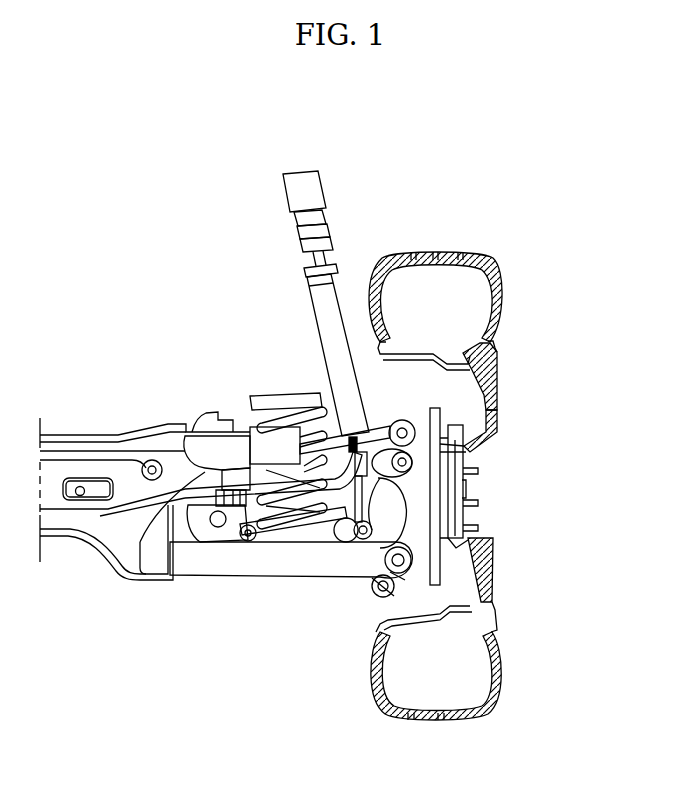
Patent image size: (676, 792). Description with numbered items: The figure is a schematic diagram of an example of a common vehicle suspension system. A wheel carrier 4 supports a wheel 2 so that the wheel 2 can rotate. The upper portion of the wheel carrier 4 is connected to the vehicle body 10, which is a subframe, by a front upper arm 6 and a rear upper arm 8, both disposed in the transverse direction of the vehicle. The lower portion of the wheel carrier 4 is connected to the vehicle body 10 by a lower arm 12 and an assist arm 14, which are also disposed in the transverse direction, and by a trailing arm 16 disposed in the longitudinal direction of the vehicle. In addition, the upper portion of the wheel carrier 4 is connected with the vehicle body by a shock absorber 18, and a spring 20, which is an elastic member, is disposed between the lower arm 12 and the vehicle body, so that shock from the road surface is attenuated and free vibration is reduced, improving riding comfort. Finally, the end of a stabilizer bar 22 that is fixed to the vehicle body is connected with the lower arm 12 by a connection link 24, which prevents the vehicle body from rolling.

The wheel 2 is at (490, 612).
The wheel carrier 4 is at (452, 523).
The front upper arm 6 is at (412, 461).
The rear upper arm 8 is at (318, 412).
The vehicle body 10 is at (86, 470).
The lower arm 12 is at (218, 565).
The assist arm 14 is at (290, 528).
The trailing arm 16 is at (380, 584).
The shock absorber 18 is at (314, 297).
The spring 20 is at (272, 410).
The stabilizer bar 22 is at (88, 513).
The connection link 24 is at (362, 503).